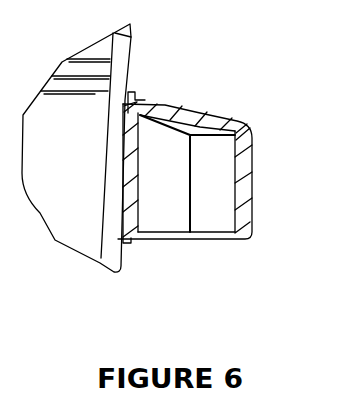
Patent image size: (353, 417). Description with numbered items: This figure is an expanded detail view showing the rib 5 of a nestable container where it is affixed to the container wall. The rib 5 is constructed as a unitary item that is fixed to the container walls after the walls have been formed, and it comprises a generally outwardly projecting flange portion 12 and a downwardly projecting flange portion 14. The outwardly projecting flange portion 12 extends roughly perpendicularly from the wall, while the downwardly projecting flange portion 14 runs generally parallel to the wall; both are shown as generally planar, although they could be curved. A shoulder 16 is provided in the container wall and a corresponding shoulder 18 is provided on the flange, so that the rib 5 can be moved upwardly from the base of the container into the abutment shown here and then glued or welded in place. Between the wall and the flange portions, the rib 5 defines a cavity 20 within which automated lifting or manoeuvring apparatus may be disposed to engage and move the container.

The rib 5 is at (278, 113).
The outwardly projecting flange portion 12 is at (203, 112).
The downwardly projecting flange portion 14 is at (252, 170).
The shoulder 16 is at (127, 102).
The corresponding shoulder 18 is at (145, 101).
The cavity 20 is at (173, 217).